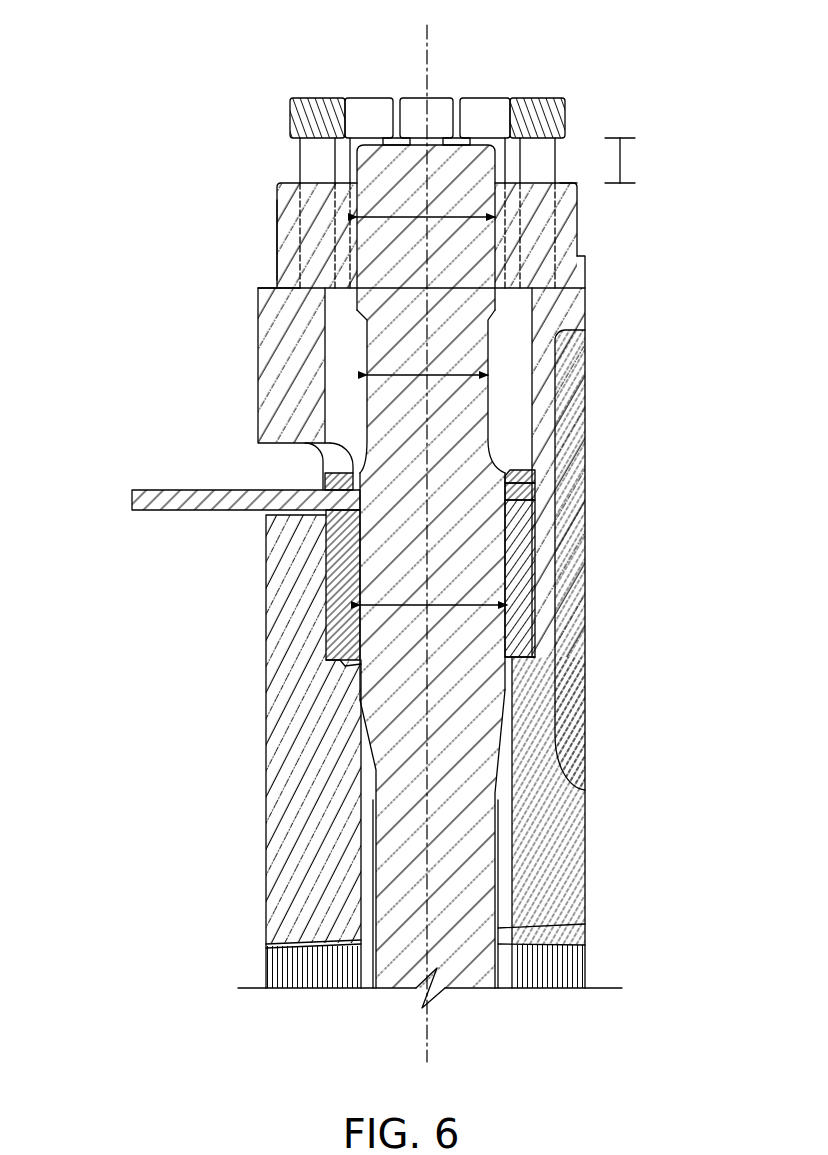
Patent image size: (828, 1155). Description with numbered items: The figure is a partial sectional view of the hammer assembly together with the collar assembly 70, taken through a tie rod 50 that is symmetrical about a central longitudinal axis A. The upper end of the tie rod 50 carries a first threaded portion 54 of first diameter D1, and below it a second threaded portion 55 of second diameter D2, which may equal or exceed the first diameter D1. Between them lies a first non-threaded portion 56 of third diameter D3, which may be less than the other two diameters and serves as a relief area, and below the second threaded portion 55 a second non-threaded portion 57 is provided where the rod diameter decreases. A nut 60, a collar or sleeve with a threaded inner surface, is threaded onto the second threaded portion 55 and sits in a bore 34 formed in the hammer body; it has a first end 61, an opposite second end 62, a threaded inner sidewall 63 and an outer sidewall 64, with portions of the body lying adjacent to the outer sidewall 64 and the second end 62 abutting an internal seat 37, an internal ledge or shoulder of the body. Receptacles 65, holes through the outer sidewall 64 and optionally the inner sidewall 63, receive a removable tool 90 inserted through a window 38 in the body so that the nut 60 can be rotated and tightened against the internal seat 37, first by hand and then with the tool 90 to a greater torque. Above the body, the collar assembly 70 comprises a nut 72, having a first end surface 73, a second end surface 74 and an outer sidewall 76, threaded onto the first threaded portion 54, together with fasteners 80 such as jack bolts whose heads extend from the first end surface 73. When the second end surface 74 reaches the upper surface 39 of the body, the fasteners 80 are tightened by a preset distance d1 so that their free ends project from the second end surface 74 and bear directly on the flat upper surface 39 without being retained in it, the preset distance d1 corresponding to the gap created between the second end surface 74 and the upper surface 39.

The central longitudinal axis A is at (427, 40).
The bore 34 is at (505, 900).
The internal seat 37 is at (333, 680).
The window 38 is at (265, 467).
The upper surface 39 is at (258, 290).
The tie rod 50 is at (470, 973).
The first threaded portion 54 is at (483, 165).
The second threaded portion 55 is at (480, 575).
The first non-threaded portion 56 is at (467, 342).
The second non-threaded portion 57 is at (400, 868).
The nut 60 is at (340, 613).
The first end 61 is at (512, 468).
The second end 62 is at (532, 662).
The inner sidewall 63 is at (512, 528).
The outer sidewall 64 is at (320, 556).
The receptacles 65 is at (345, 490).
The collar assembly 70 is at (270, 170).
The nut 72 is at (546, 234).
The first end surface 73 is at (577, 186).
The second end surface 74 is at (585, 288).
The outer sidewall 76 is at (277, 226).
The fasteners 80 is at (307, 86).
The removable tool 90 is at (150, 500).
The preset distance d1 is at (620, 160).
The first diameter D1 is at (426, 203).
The second diameter D2 is at (433, 590).
The third diameter D3 is at (427, 360).